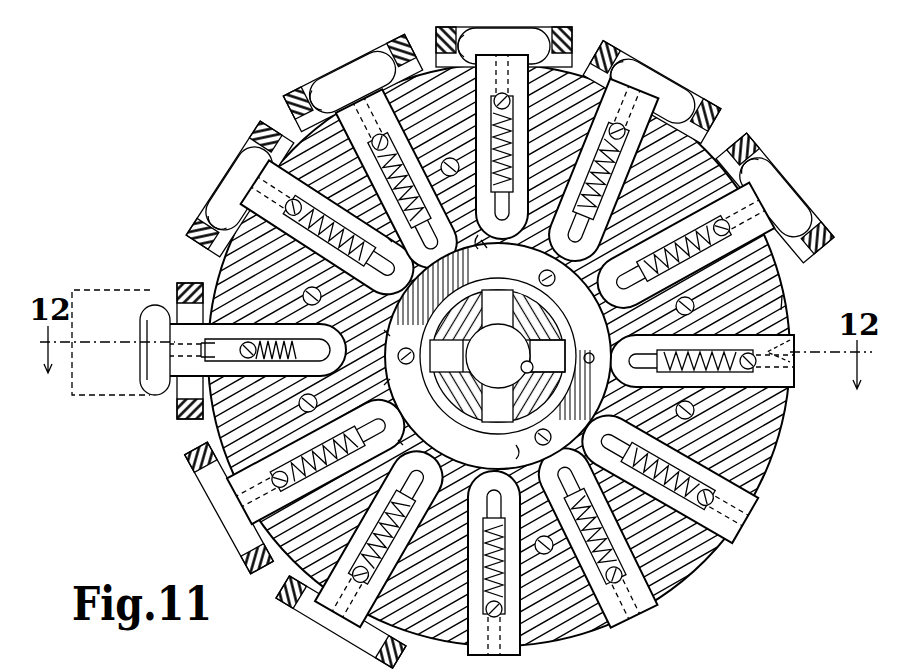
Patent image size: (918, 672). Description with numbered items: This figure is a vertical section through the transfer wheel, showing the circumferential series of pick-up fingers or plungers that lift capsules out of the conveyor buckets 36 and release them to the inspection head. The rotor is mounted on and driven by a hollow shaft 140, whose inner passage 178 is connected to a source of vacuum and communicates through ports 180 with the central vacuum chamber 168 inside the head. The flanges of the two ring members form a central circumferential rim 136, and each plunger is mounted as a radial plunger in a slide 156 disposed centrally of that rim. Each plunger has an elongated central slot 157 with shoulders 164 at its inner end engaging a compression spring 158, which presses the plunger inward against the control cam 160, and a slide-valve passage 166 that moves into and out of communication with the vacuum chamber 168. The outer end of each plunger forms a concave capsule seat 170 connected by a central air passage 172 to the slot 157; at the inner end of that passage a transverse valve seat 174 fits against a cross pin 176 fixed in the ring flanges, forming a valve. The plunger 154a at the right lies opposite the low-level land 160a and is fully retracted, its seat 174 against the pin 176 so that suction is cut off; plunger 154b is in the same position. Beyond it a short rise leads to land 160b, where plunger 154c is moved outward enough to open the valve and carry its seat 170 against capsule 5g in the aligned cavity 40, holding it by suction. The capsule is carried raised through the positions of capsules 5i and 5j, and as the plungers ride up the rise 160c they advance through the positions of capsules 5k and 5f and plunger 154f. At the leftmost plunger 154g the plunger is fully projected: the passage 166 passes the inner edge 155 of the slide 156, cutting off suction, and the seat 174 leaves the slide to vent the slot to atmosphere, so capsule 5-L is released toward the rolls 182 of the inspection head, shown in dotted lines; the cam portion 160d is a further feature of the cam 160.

The capsule 5i is at (493, 37).
The capsule 5g is at (668, 88).
The capsule 5f is at (773, 183).
The capsule 5j is at (343, 75).
The capsule 5k is at (217, 197).
The capsule 5-L is at (162, 298).
The bucket 36 is at (195, 488).
The cavity 40 is at (703, 101).
The rim 136 is at (323, 160).
The hollow shaft 140 is at (540, 313).
The plunger 154a is at (787, 340).
The plunger 154b is at (700, 230).
The plunger 154c is at (700, 107).
The plunger 154f is at (257, 183).
The plunger 154g is at (170, 310).
The inner edge 155 is at (345, 357).
The slide 156 is at (617, 117).
The central slot 157 is at (783, 300).
The compression spring 158 is at (600, 214).
The control cam 160 is at (458, 450).
The low-level land 160a is at (509, 451).
The land 160b is at (484, 259).
The rise 160c is at (387, 342).
The ring feature 160d is at (387, 373).
The shoulders 164 is at (578, 270).
The slide-valve passage 166 is at (388, 240).
The vacuum chamber 168 is at (487, 250).
The capsule seat 170 is at (155, 394).
The air passage 172 is at (790, 350).
The valve seat 174 is at (623, 68).
The cross pin 176 is at (713, 150).
The inner passage 178 is at (548, 356).
The ports 180 is at (433, 371).
The rolls 182 is at (96, 289).